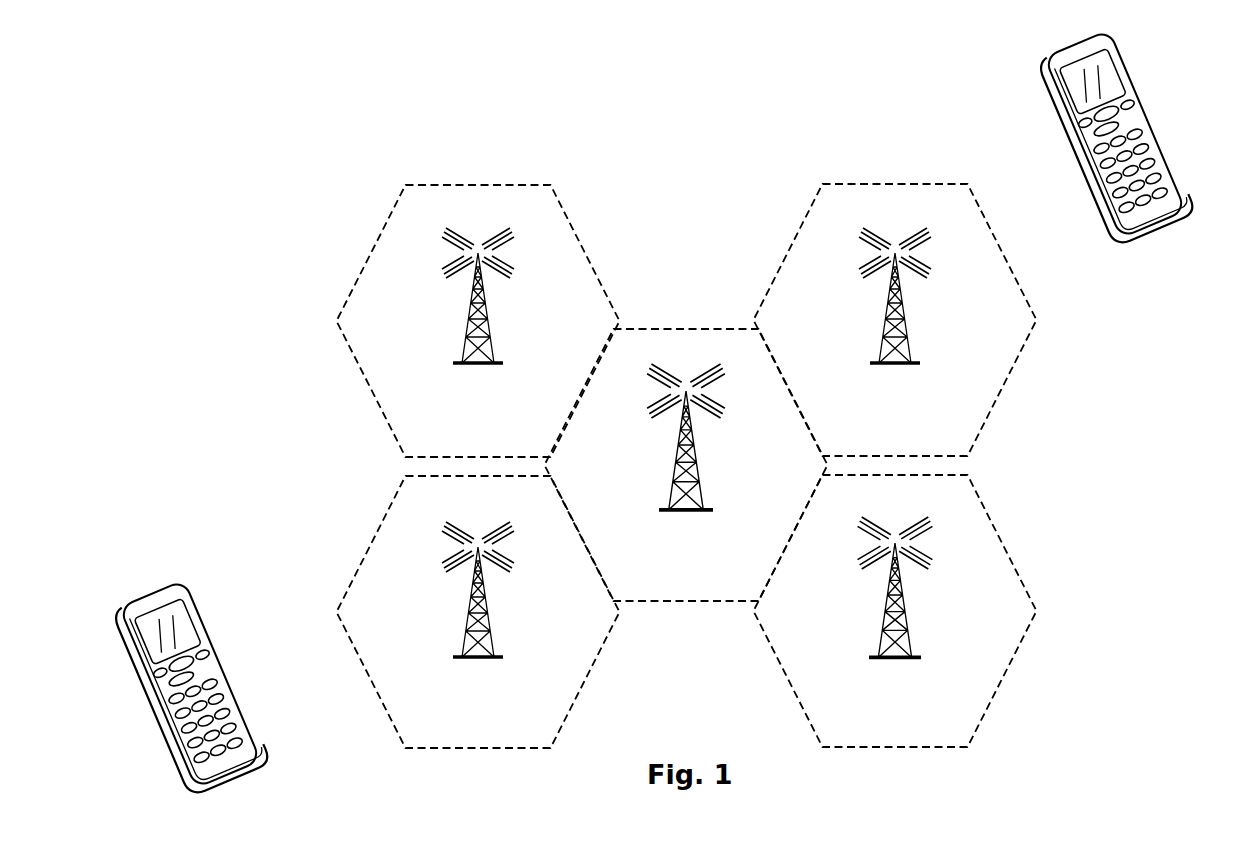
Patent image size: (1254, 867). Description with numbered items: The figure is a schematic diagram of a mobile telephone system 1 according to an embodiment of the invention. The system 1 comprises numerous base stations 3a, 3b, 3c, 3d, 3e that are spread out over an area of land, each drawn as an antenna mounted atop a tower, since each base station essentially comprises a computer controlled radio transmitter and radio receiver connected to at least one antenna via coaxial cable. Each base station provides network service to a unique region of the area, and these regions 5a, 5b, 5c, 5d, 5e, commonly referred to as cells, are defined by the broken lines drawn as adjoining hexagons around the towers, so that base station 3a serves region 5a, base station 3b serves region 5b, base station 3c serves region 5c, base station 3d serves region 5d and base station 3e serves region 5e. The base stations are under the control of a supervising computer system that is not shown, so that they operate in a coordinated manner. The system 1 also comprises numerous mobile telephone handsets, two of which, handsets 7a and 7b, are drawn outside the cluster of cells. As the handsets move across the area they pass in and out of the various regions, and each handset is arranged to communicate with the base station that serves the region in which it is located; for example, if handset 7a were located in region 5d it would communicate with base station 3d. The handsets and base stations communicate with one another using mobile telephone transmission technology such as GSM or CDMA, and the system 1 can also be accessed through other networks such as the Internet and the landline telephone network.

The mobile telephone system 1 is at (303, 152).
The base station 3a is at (447, 255).
The base station 3b is at (927, 252).
The base station 3c is at (685, 370).
The base station 3d is at (447, 547).
The base station 3e is at (927, 543).
The region 5a is at (468, 416).
The region 5b is at (885, 413).
The region 5c is at (676, 566).
The region 5d is at (468, 713).
The region 5e is at (885, 711).
The mobile telephone handset 7a is at (200, 628).
The mobile telephone handset 7b is at (1125, 78).